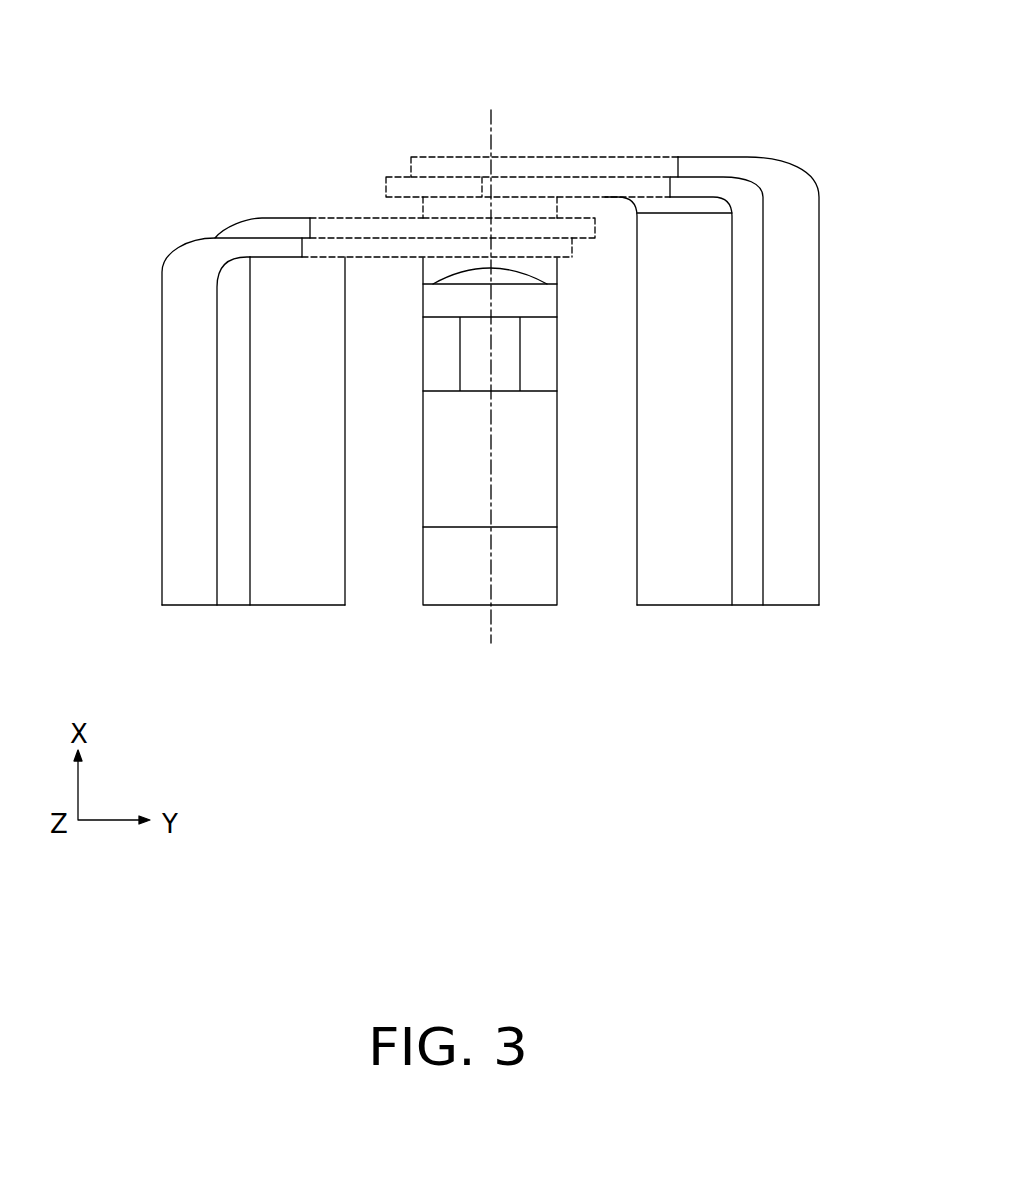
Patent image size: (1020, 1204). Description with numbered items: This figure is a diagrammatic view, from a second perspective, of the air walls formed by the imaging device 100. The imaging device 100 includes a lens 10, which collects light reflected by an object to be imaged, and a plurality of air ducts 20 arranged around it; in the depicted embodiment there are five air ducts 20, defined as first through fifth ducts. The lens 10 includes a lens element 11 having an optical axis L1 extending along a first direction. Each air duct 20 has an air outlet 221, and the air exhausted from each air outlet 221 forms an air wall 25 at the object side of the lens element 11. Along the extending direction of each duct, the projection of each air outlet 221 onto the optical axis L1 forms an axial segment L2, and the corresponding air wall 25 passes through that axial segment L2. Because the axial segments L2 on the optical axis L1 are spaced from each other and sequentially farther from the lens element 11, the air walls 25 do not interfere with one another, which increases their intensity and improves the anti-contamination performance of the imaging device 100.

The imaging device 100 is at (565, 33).
The lens 10 is at (466, 592).
The lens element 11 is at (458, 279).
The air duct 20 is at (190, 589).
The air outlet 221 is at (670, 188).
The air wall 25 is at (432, 245).
The optical axis L1 is at (492, 127).
The axial segment L2 is at (491, 247).